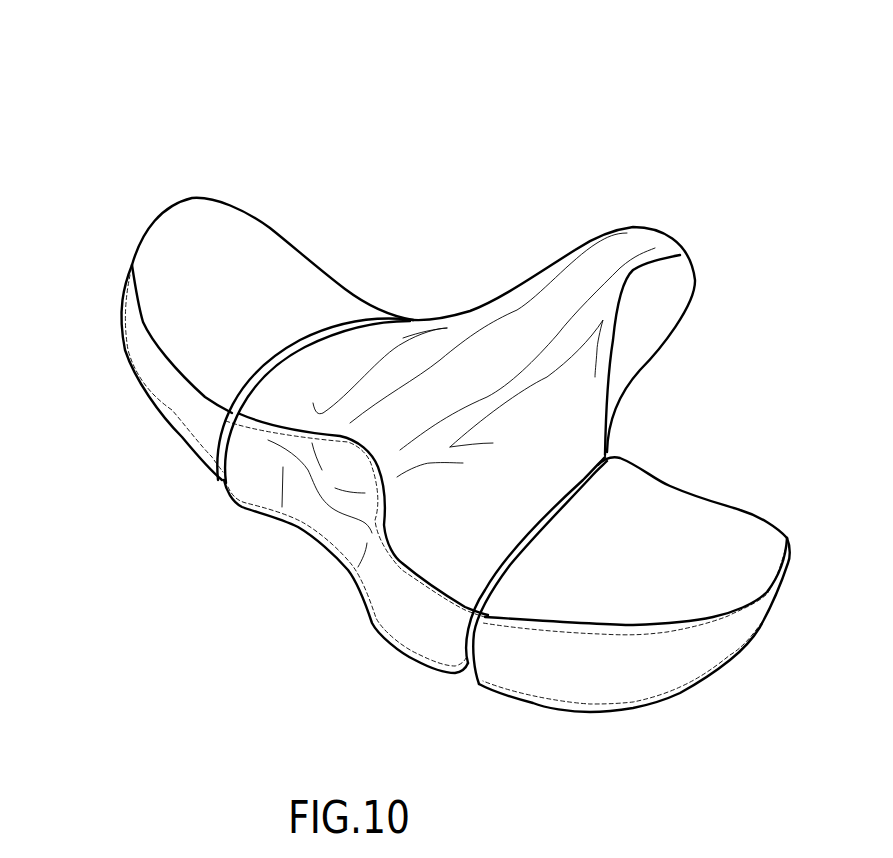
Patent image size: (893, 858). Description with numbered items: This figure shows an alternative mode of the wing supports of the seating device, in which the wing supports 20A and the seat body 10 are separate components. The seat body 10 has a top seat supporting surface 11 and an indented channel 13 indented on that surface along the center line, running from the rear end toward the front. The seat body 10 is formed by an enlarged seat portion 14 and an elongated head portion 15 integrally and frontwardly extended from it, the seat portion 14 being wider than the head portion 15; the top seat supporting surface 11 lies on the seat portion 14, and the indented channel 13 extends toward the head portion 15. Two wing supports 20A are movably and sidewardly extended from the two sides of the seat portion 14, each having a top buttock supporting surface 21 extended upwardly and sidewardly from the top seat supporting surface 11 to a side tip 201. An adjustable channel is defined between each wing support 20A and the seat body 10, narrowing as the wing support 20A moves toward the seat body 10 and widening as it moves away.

The seat body 10 is at (596, 185).
The top seat supporting surface 11 is at (472, 504).
The indented channel 13 is at (397, 408).
The seat portion 14 is at (453, 340).
The head portion 15 is at (677, 278).
The wing support 20A is at (442, 393).
The side tip 201 is at (124, 206).
The top buttock supporting surface 21 is at (223, 307).